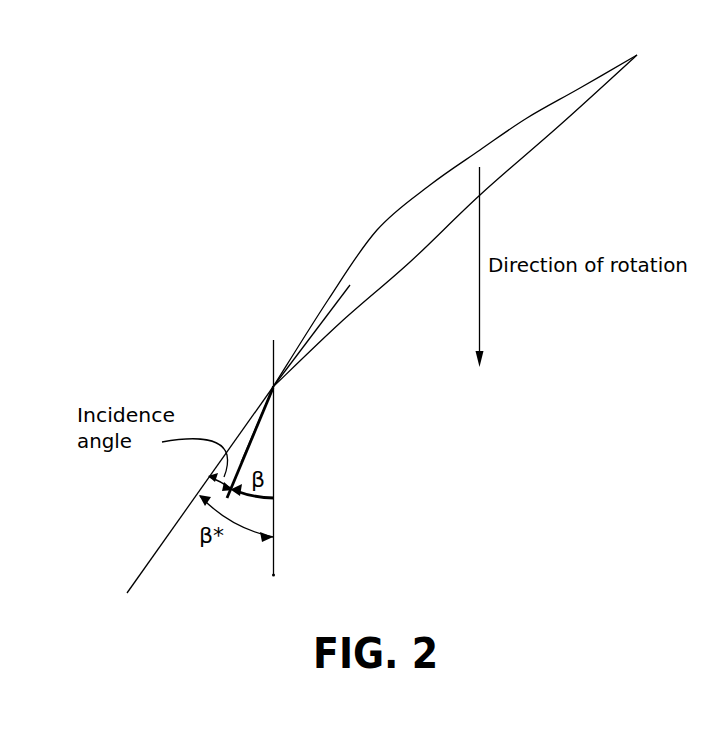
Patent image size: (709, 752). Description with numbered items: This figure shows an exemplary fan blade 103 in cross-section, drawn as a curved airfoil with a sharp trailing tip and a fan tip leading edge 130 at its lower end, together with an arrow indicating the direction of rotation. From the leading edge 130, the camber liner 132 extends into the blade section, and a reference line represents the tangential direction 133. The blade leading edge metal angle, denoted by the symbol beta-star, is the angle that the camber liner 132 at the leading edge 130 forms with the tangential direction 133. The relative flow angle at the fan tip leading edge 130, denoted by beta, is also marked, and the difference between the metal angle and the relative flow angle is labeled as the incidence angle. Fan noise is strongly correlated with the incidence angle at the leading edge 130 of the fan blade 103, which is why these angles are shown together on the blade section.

The fan blade 103 is at (533, 127).
The fan tip leading edge 130 is at (271, 381).
The camber liner 132 is at (293, 365).
The tangential direction 133 is at (273, 472).